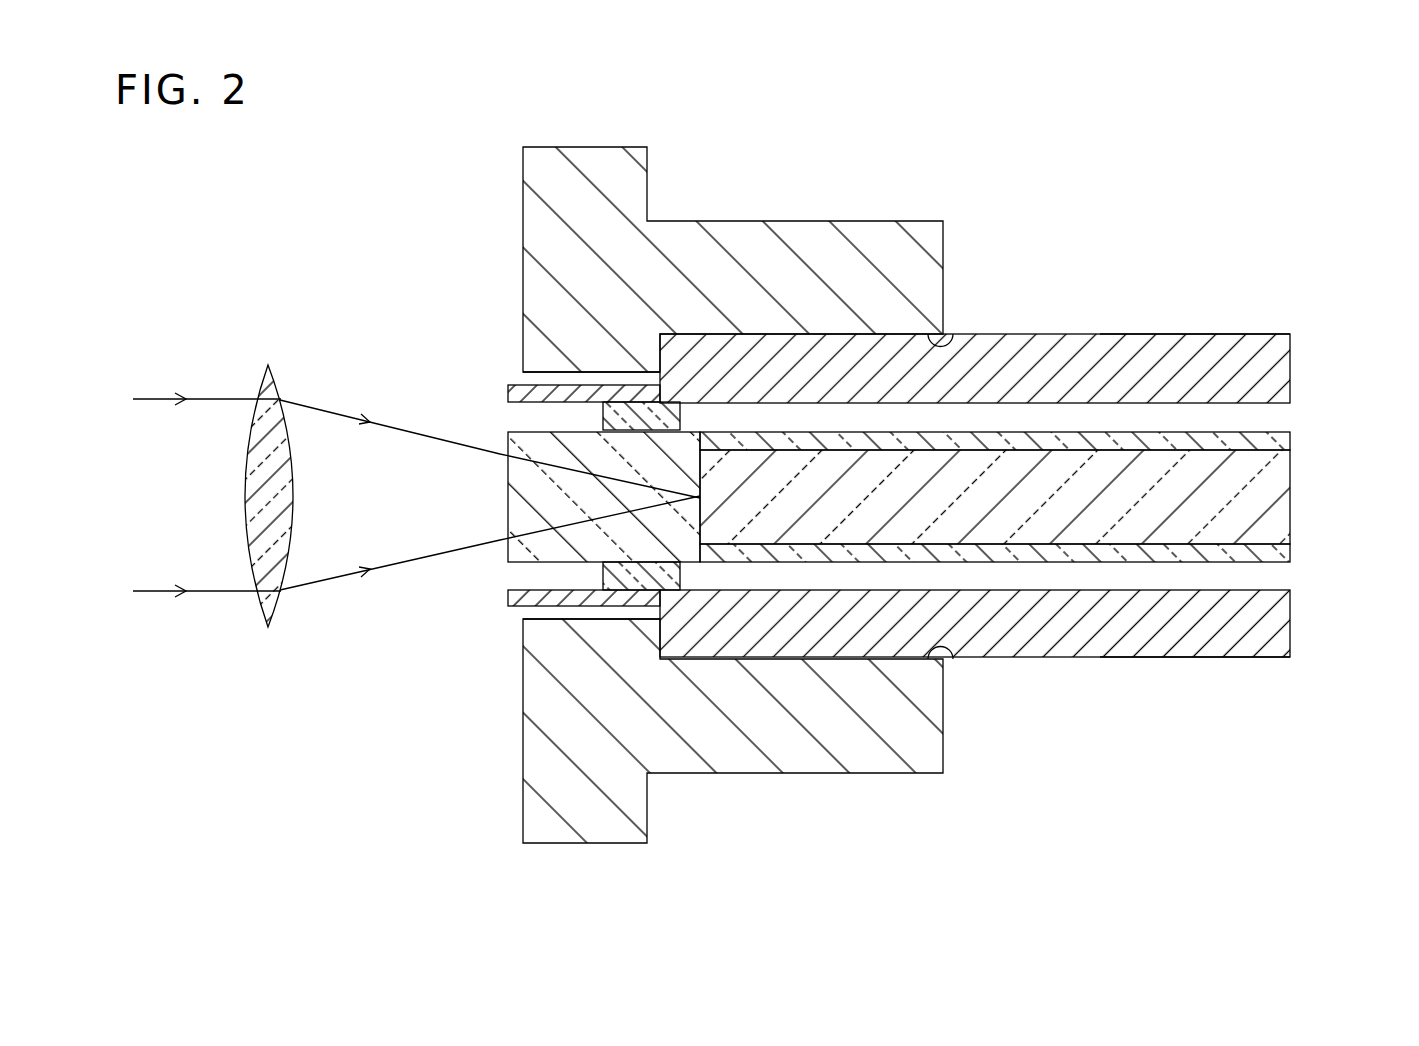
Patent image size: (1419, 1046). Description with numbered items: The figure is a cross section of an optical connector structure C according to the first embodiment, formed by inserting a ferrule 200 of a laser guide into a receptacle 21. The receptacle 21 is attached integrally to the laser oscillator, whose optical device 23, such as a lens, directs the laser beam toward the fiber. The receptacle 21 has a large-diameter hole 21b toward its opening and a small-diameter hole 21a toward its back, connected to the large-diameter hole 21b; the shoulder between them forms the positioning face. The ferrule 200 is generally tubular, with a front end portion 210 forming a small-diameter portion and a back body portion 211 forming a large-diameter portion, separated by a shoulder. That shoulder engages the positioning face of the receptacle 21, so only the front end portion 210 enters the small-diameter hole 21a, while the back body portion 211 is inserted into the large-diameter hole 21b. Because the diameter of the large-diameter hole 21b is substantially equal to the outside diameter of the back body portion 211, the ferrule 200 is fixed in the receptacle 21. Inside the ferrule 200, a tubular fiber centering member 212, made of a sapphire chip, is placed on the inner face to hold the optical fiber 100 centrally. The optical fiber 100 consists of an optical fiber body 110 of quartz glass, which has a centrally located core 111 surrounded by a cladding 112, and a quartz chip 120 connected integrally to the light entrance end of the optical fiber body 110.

The optical connector structure C is at (378, 213).
The receptacle 21 is at (877, 232).
The small-diameter hole 21a is at (512, 385).
The large-diameter hole 21b is at (953, 333).
The optical device 23 is at (270, 385).
The optical fiber 100 is at (1043, 526).
The optical fiber body 110 is at (995, 526).
The core 111 is at (1040, 535).
The cladding 112 is at (1080, 440).
The quartz chip 120 is at (507, 457).
The ferrule 200 is at (1253, 335).
The front end portion 210 is at (597, 390).
The back body portion 211 is at (1163, 363).
The fiber centering member 212 is at (663, 412).